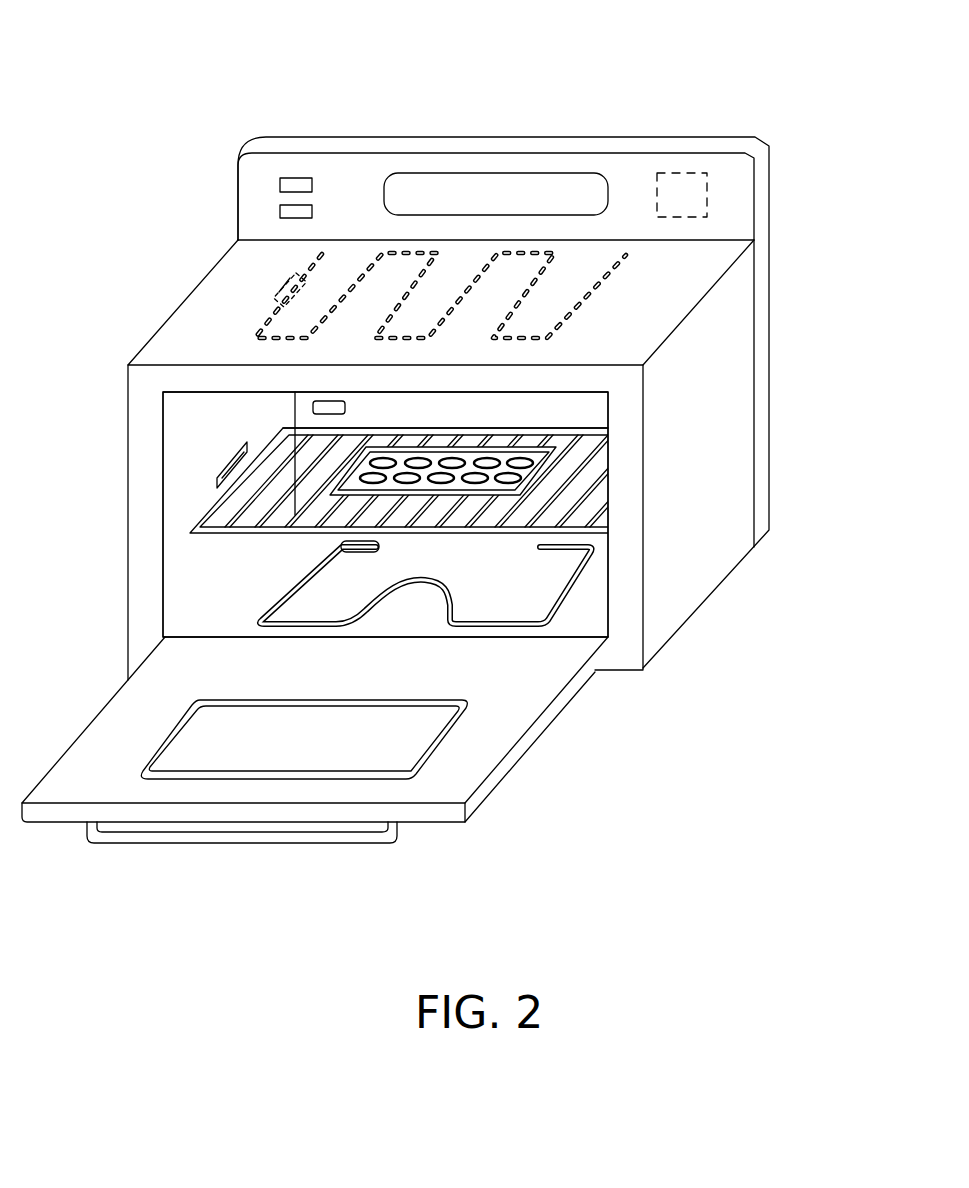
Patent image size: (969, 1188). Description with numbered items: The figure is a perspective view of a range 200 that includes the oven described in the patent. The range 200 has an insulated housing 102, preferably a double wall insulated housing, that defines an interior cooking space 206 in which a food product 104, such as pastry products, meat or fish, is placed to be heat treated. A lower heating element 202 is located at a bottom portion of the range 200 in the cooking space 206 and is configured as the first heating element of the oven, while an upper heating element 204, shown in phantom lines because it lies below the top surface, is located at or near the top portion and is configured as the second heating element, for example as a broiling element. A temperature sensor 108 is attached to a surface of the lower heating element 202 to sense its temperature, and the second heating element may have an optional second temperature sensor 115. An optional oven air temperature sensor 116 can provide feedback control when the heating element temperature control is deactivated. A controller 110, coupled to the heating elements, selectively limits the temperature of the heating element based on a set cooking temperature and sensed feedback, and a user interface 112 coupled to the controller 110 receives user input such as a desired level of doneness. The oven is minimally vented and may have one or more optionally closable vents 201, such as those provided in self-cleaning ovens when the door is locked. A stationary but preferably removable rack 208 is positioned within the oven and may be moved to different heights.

The range 200 is at (836, 127).
The user interface 112 is at (557, 173).
The controller 110 is at (692, 173).
The upper heating element 204 is at (603, 277).
The second temperature sensor 115 is at (287, 290).
The insulated housing 102 is at (598, 405).
The closable vent 201 is at (313, 408).
The rack 208 is at (200, 533).
The cooking space 206 is at (469, 422).
The food product 104 is at (525, 443).
The oven air temperature sensor 116 is at (220, 470).
The lower heating element 202 is at (568, 590).
The temperature sensor 108 is at (348, 550).